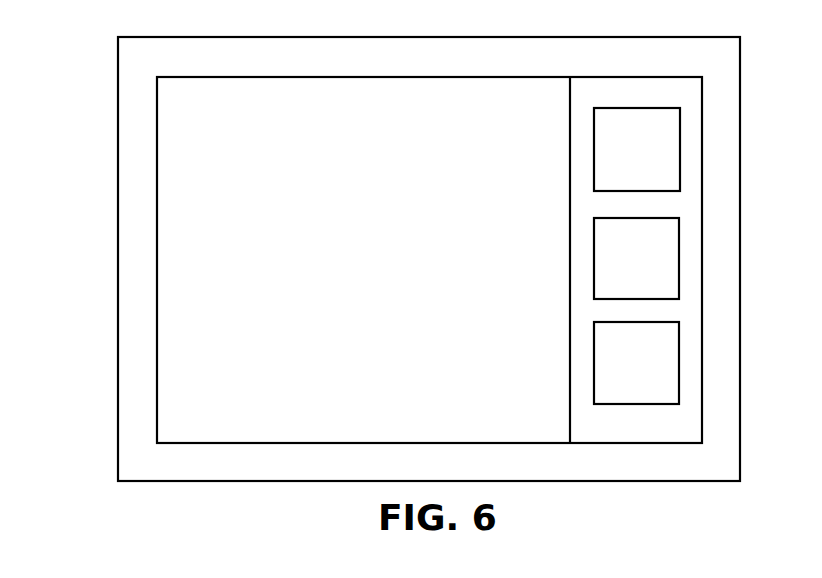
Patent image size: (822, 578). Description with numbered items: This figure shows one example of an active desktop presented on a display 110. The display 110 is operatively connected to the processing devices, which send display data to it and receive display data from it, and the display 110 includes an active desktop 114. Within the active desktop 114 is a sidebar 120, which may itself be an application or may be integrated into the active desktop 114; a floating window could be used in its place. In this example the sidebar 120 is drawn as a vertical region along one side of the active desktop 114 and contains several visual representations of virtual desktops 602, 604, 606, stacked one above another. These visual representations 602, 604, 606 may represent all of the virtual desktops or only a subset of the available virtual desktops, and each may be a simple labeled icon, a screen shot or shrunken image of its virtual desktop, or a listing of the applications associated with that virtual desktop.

The display 110 is at (118, 183).
The active desktop 114 is at (172, 135).
The sidebar 120 is at (599, 425).
The visual representation of a virtual desktop 602 is at (681, 143).
The visual representation of a virtual desktop 604 is at (679, 250).
The visual representation of a virtual desktop 606 is at (679, 358).